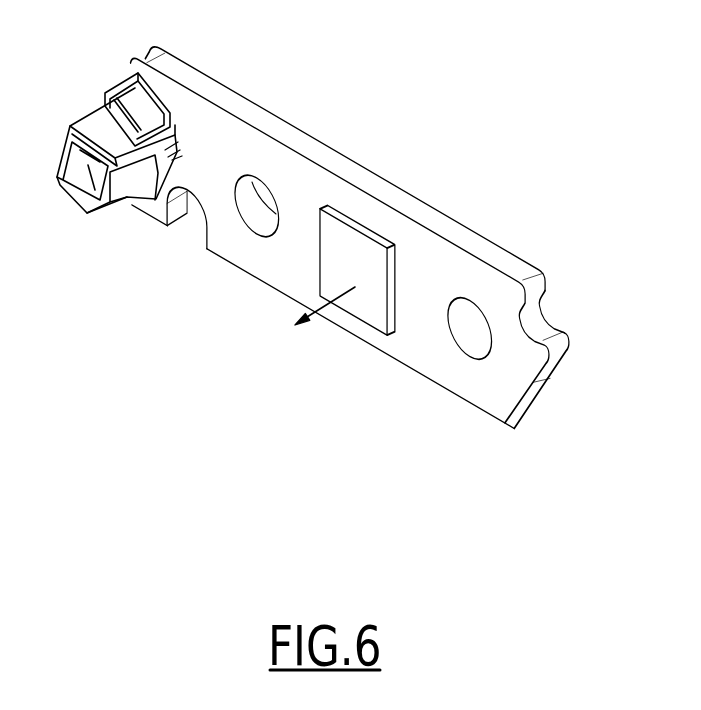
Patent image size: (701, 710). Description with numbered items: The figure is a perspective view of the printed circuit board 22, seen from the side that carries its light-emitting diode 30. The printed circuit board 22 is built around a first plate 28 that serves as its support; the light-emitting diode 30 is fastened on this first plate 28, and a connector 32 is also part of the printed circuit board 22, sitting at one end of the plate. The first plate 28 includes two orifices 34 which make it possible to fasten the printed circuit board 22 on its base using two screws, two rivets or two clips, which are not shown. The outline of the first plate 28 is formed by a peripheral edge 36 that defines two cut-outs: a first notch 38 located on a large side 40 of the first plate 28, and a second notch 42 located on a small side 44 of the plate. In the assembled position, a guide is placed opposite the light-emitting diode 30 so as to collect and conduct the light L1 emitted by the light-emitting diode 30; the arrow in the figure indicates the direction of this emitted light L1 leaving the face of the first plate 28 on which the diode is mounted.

The printed circuit board 22 is at (362, 238).
The first plate 28 is at (262, 257).
The light-emitting diode 30 is at (335, 258).
The connector 32 is at (60, 180).
The orifices 34 is at (258, 212).
The peripheral edge 36 is at (227, 100).
The first notch 38 is at (198, 218).
The large side 40 is at (412, 372).
The second notch 42 is at (533, 315).
The small side 44 is at (543, 380).
The light L1 is at (357, 293).